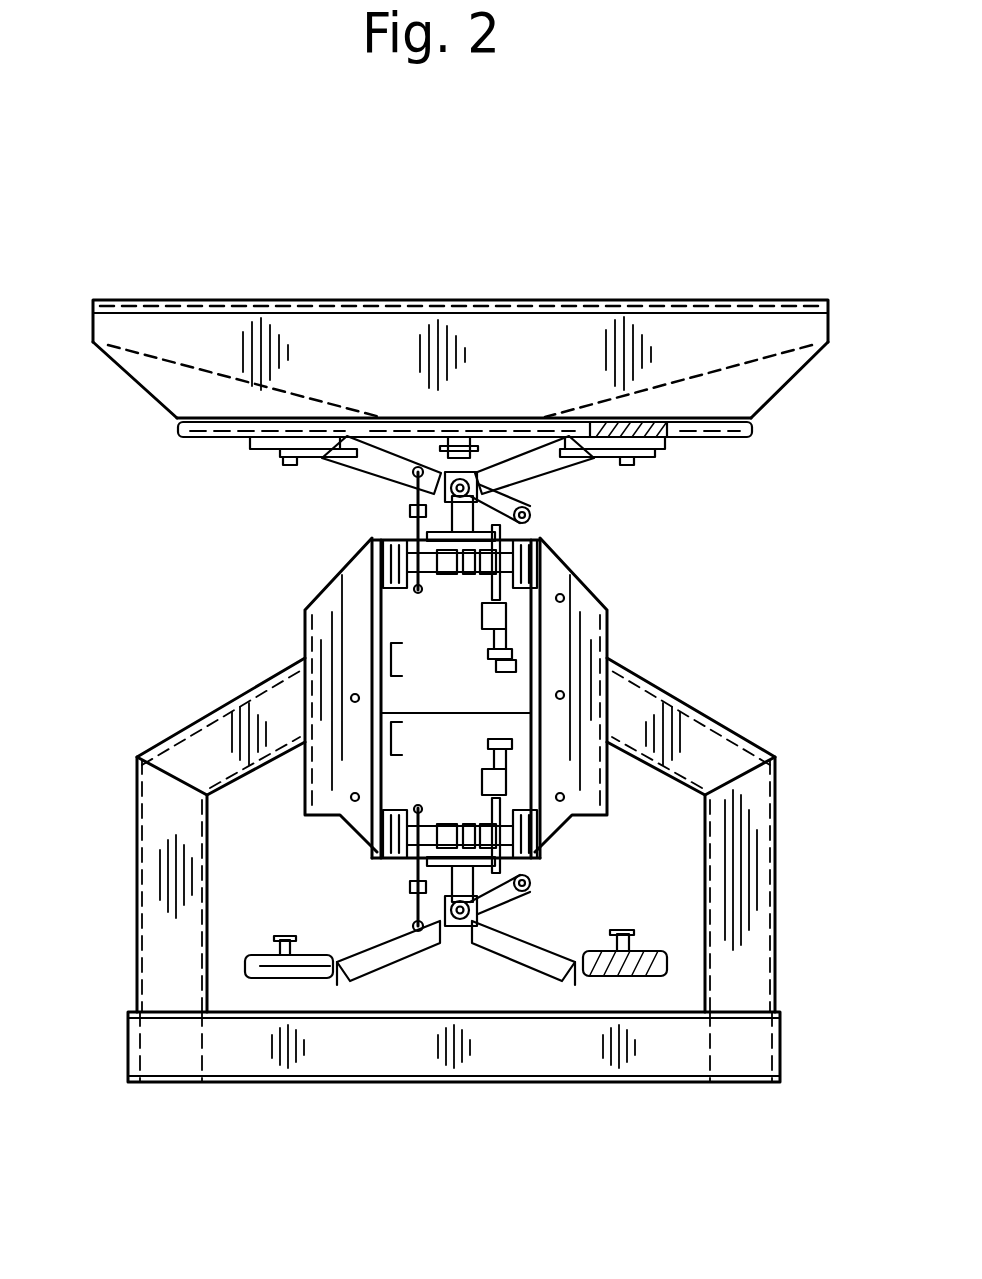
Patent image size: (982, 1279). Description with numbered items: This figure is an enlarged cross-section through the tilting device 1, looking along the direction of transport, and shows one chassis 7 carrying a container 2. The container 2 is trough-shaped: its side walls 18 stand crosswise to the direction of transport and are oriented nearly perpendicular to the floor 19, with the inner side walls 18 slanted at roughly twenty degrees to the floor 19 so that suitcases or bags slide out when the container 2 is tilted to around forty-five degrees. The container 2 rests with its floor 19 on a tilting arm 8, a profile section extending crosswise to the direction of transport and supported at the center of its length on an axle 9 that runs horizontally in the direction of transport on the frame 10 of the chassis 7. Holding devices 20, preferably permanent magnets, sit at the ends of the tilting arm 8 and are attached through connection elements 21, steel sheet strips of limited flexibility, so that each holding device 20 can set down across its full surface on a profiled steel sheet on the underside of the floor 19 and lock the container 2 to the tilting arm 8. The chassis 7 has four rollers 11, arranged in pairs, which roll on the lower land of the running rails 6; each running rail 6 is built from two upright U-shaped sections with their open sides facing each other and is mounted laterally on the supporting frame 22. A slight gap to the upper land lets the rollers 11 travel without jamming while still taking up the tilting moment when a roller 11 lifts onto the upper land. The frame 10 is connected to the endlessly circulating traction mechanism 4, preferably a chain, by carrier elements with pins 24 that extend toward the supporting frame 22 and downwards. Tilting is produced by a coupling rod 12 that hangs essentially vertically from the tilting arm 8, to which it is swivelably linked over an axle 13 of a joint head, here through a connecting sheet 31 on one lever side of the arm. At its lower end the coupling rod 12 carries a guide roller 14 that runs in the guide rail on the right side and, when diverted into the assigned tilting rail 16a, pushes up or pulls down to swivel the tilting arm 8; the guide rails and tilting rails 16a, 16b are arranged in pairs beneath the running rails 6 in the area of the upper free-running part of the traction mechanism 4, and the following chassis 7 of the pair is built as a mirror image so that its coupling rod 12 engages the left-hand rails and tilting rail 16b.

The tilting device 1 is at (193, 129).
The container 2 is at (466, 325).
The traction mechanism 4 is at (460, 577).
The running rail 6 is at (375, 540).
The chassis 7 is at (365, 907).
The tilting arm 8 is at (540, 462).
The axle 9 is at (417, 493).
The frame 10 is at (475, 930).
The roller 11 is at (377, 850).
The coupling rod 12 is at (490, 531).
The axle 13 is at (538, 514).
The guide roller 14 is at (515, 675).
The tilting rail 16a is at (510, 618).
The tilting rail 16b is at (403, 657).
The side wall 18 is at (721, 405).
The floor 19 is at (372, 415).
The holding device 20 is at (662, 445).
The connection element 21 is at (320, 458).
The supporting frame 22 is at (750, 877).
The pin 24 is at (443, 758).
The connecting sheet 31 is at (513, 493).